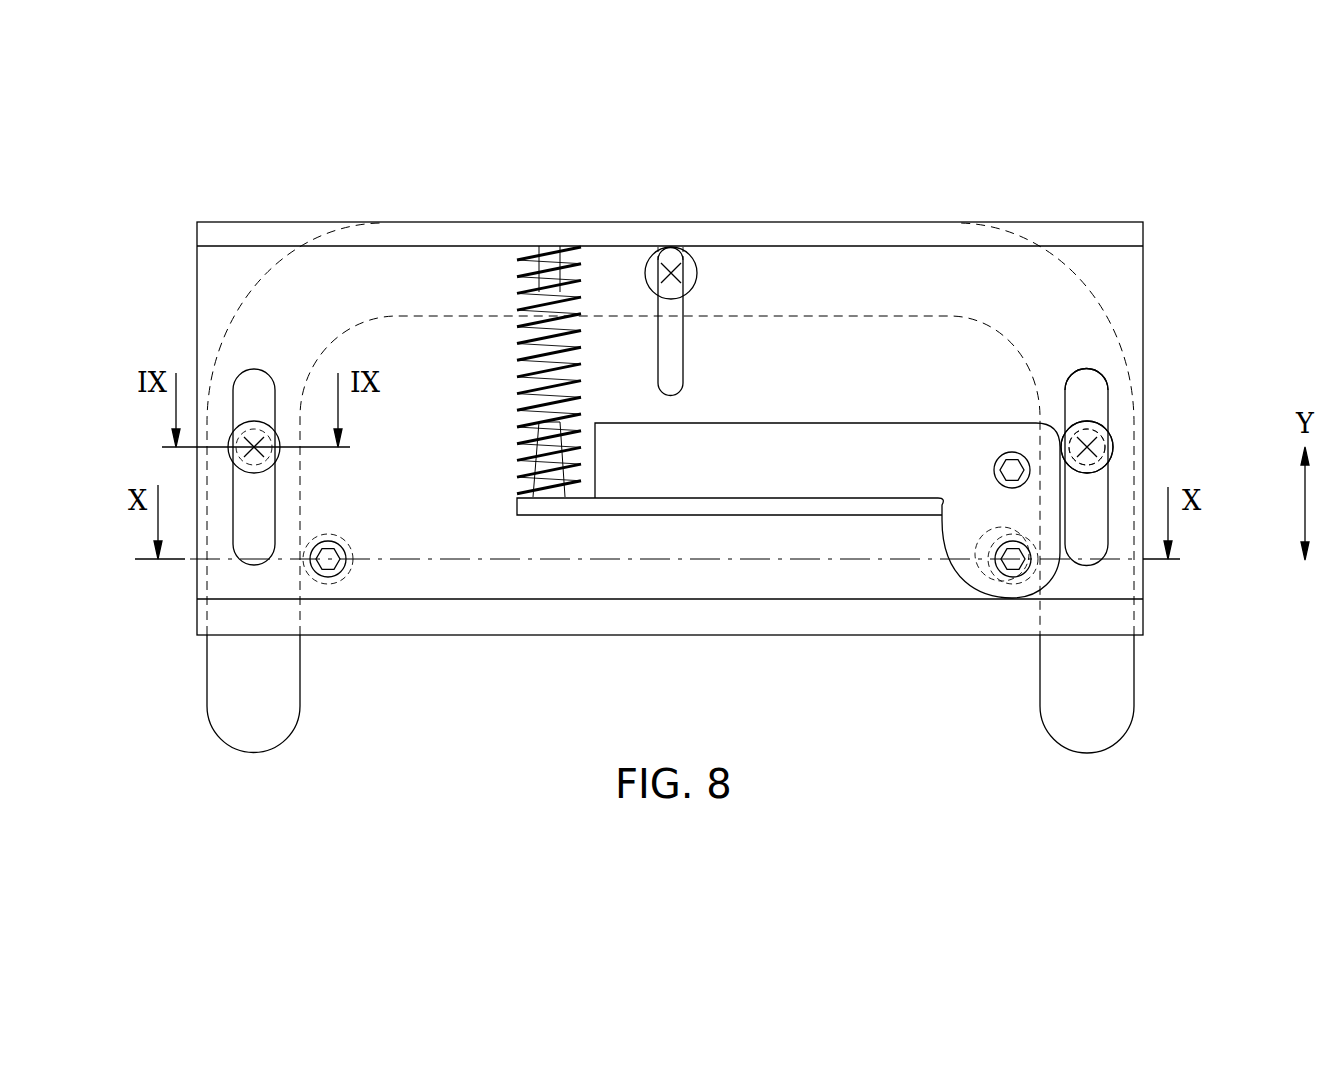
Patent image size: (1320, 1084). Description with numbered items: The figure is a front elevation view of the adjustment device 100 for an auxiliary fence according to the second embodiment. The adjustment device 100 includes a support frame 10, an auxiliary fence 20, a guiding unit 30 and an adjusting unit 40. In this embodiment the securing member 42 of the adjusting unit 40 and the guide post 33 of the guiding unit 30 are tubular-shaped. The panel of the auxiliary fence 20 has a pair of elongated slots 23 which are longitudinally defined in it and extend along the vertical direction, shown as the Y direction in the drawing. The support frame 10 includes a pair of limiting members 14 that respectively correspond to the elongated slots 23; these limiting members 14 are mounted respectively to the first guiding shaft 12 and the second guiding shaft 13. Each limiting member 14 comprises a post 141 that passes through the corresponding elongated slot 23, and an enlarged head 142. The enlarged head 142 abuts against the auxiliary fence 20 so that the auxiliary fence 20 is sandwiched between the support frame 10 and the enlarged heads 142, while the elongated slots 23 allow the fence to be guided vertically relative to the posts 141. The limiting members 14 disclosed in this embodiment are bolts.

The adjustment device 100 is at (1135, 214).
The auxiliary fence 20 is at (1158, 271).
The support frame 10 is at (1150, 712).
The second guiding shaft 13 is at (222, 476).
The guide post 33 is at (343, 577).
The guiding unit 30 is at (695, 298).
The adjusting unit 40 is at (786, 530).
The securing member 42 is at (1010, 585).
The first guiding shaft 12 is at (1118, 495).
The elongated slot 23 is at (1085, 388).
The limiting member 14 is at (1087, 432).
The post 141 is at (1112, 420).
The enlarged head 142 is at (1113, 446).